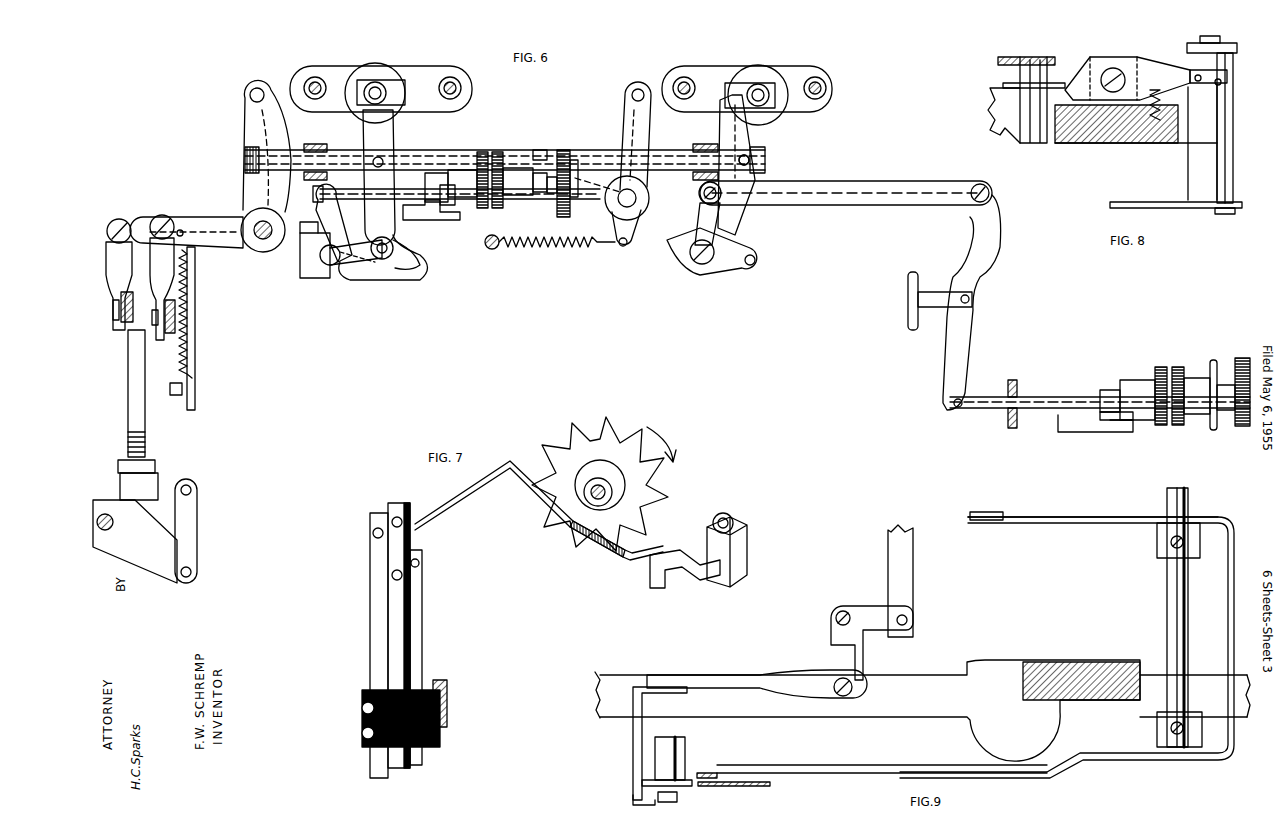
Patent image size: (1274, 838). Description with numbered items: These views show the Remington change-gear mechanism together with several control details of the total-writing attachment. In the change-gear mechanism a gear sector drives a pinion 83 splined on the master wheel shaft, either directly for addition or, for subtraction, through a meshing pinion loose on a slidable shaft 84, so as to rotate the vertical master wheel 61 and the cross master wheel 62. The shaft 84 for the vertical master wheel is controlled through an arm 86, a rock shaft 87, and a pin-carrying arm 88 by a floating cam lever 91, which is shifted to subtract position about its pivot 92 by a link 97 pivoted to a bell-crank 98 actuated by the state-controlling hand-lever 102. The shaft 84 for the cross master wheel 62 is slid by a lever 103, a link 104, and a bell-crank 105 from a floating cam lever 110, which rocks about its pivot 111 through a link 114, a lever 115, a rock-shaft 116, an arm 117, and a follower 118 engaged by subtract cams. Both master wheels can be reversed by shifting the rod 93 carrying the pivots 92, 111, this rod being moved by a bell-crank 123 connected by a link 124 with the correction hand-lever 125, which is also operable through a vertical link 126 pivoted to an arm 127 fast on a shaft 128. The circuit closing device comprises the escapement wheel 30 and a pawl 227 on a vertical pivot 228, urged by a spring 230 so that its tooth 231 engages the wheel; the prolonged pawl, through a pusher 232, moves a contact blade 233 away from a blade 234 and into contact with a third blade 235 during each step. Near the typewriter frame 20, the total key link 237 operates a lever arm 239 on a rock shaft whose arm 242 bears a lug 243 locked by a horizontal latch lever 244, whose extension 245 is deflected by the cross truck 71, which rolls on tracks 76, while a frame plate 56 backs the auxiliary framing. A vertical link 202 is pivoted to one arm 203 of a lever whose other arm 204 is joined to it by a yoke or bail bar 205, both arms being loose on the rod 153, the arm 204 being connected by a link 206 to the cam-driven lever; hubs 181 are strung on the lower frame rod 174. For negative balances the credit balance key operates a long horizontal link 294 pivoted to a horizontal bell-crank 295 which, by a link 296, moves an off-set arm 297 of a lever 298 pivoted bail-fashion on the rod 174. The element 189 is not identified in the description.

In FIG. 8, the typewriter frame 20 is at (1080, 140).
In FIG. 9, the typewriter frame 20 is at (1025, 660).
In FIG. 7, the escapement wheel 30 is at (607, 425).
In FIG. 8, the frame plate 56 is at (1018, 57).
In FIG. 6, the vertical master wheel 61 is at (572, 160).
In FIG. 6, the cross master wheel 62 is at (1243, 358).
In FIG. 8, the cross truck 71 is at (990, 108).
In FIG. 8, the tracks 76 is at (1020, 133).
In FIG. 6, the pinion 83 is at (497, 152).
In FIG. 6, the slidable shaft 84 is at (410, 189).
In FIG. 6, the arm 86 is at (330, 205).
In FIG. 6, the rock shaft 87 is at (330, 265).
In FIG. 6, the pin-carrying arm 88 is at (370, 262).
In FIG. 6, the floating cam lever 91 is at (385, 280).
In FIG. 6, the pivot 92 is at (385, 160).
In FIG. 6, the rod 93 is at (533, 152).
In FIG. 6, the link 97 is at (305, 95).
In FIG. 6, the bell-crank 98 is at (262, 150).
In FIG. 6, the state-controlling hand-lever 102 is at (190, 290).
In FIG. 6, the lever 103 is at (965, 331).
In FIG. 6, the link 104 is at (812, 205).
In FIG. 6, the bell-crank 105 is at (715, 238).
In FIG. 6, the floating cam lever 110 is at (760, 258).
In FIG. 6, the pivot 111 is at (750, 158).
In FIG. 6, the link 114 is at (670, 66).
In FIG. 6, the lever 115 is at (626, 118).
In FIG. 6, the rock-shaft 116 is at (632, 220).
In FIG. 6, the arm 117 is at (585, 212).
In FIG. 6, the follower 118 is at (530, 198).
In FIG. 6, the bell-crank 123 is at (240, 200).
In FIG. 6, the link 124 is at (100, 225).
In FIG. 6, the correction hand-lever 125 is at (127, 330).
In FIG. 6, the vertical link 126 is at (146, 433).
In FIG. 6, the arm 127 is at (200, 575).
In FIG. 6, the shaft 128 is at (108, 530).
In FIG. 9, the rod 153 is at (1165, 604).
In FIG. 9, the lower frame rod 174 is at (677, 797).
In FIG. 9, the hub 181 is at (660, 763).
In FIG. 9, the strip 189 is at (768, 786).
In FIG. 9, the vertical link 202 is at (743, 742).
In FIG. 9, the lever arm 203 is at (808, 765).
In FIG. 9, the lever arm 204 is at (1053, 523).
In FIG. 9, the yoke or bail bar 205 is at (1225, 632).
In FIG. 9, the link 206 is at (1000, 512).
In FIG. 7, the pawl 227 is at (665, 588).
In FIG. 7, the vertical pivot 228 is at (745, 510).
In FIG. 7, the spring 230 is at (712, 522).
In FIG. 7, the tooth 231 is at (575, 538).
In FIG. 7, the pusher 232 is at (455, 498).
In FIG. 7, the contact blade 233 is at (400, 500).
In FIG. 7, the contact blade 234 is at (425, 568).
In FIG. 7, the contact blade 235 is at (370, 520).
In FIG. 8, the link 237 is at (1150, 202).
In FIG. 8, the lever arm 239 is at (1200, 197).
In FIG. 8, the arm 242 is at (1190, 45).
In FIG. 8, the lug 243 is at (1192, 70).
In FIG. 8, the latch lever 244 is at (1068, 60).
In FIG. 8, the extension 245 is at (1005, 83).
In FIG. 9, the horizontal link 294 is at (915, 583).
In FIG. 9, the horizontal bell-crank 295 is at (830, 655).
In FIG. 9, the link 296 is at (725, 652).
In FIG. 9, the off-set arm 297 is at (672, 693).
In FIG. 9, the lever 298 is at (633, 796).